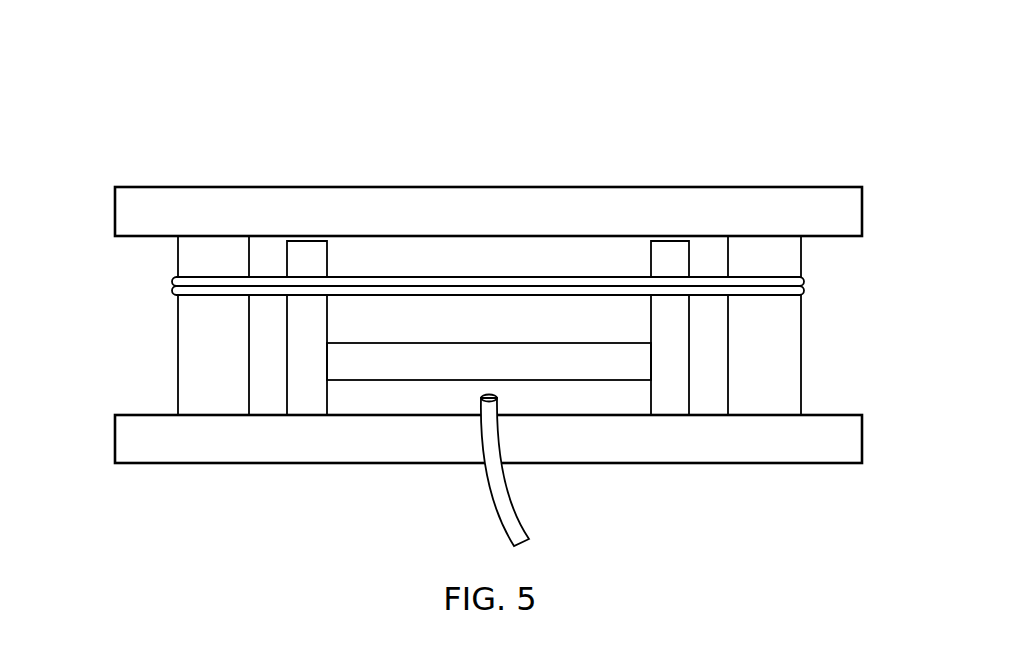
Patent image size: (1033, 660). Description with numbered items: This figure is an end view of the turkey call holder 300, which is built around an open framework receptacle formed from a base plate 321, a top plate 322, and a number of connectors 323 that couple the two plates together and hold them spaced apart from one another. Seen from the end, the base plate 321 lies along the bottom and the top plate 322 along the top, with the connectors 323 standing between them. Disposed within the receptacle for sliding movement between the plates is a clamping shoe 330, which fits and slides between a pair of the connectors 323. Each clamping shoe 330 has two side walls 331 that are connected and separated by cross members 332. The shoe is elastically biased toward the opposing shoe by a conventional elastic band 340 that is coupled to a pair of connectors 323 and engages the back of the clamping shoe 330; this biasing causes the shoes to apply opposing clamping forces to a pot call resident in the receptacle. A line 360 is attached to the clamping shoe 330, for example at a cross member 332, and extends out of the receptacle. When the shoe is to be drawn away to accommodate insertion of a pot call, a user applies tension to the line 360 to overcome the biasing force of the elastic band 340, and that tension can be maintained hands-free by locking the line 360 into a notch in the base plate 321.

The turkey call holder 300 is at (103, 87).
The base plate 321 is at (146, 447).
The top plate 322 is at (797, 208).
The connector 323 is at (203, 356).
The clamping shoe 330 is at (711, 368).
The side wall 331 is at (302, 388).
The cross member 332 is at (407, 380).
The elastic band 340 is at (493, 282).
The line 360 is at (515, 523).